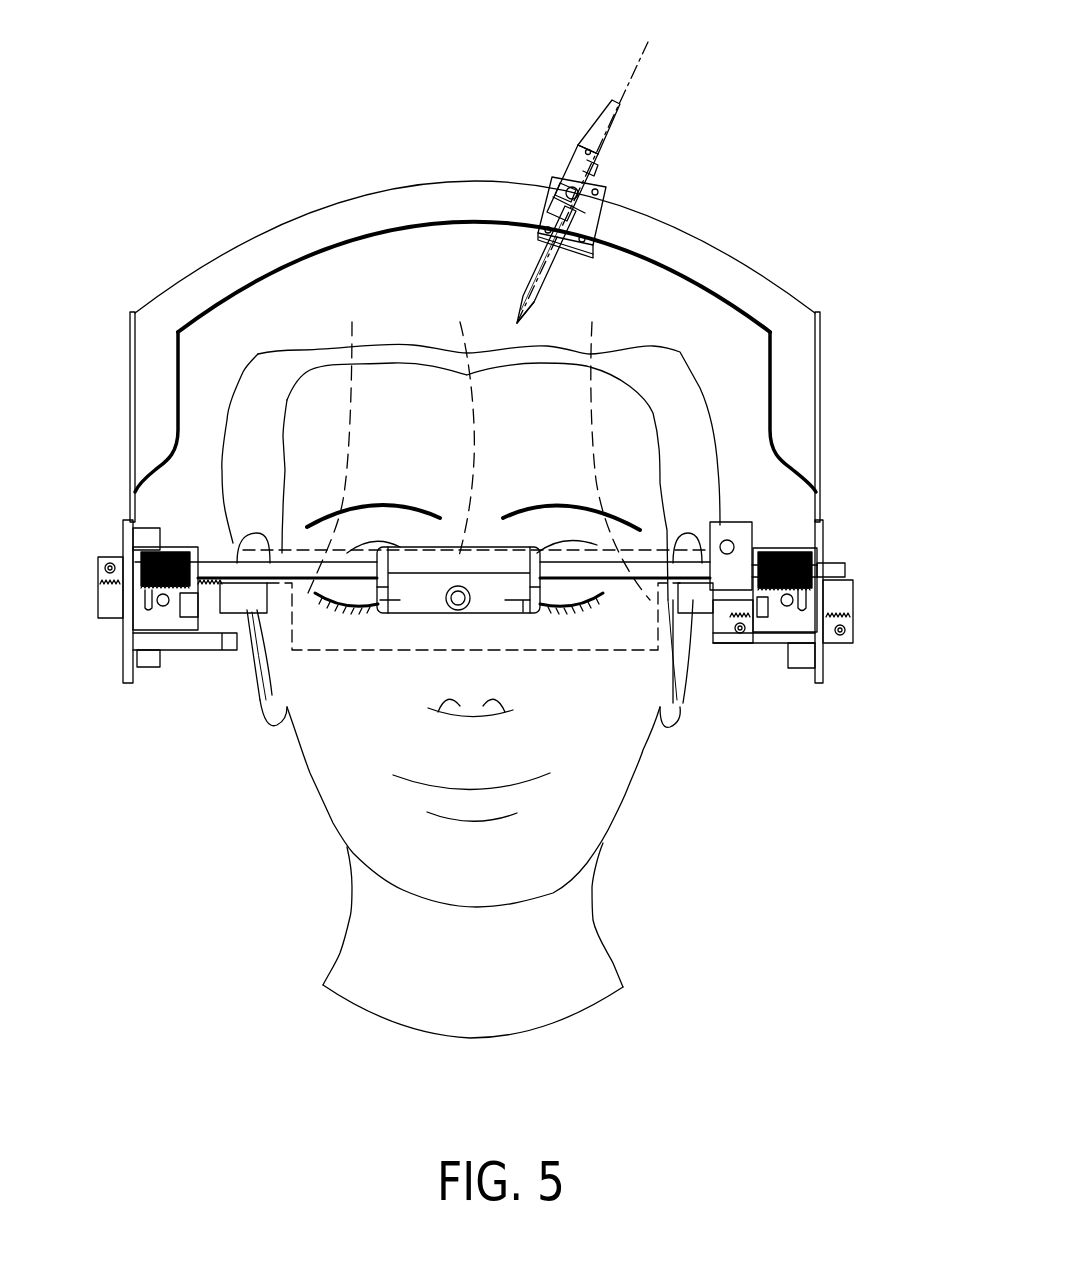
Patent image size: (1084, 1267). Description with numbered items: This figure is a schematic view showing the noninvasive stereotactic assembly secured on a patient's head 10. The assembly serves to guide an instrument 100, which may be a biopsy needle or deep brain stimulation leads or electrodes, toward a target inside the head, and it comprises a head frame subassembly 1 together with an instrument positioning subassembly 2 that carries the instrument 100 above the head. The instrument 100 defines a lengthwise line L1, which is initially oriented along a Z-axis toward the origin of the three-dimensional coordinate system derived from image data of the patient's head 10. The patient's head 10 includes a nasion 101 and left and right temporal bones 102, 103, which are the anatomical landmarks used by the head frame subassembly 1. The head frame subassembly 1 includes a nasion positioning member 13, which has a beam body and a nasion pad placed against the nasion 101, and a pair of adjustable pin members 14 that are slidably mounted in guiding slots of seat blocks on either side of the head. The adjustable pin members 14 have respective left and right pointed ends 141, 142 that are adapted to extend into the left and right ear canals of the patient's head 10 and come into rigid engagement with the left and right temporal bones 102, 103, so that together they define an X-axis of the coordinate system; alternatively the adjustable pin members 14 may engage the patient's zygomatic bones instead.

The head frame subassembly 1 is at (858, 666).
The instrument positioning subassembly 2 is at (722, 252).
The patient's head 10 is at (350, 798).
The nasion positioning member 13 is at (417, 588).
The adjustable pin members 14 is at (247, 612).
The left pointed end 141 is at (668, 655).
The right pointed end 142 is at (290, 595).
The instrument 100 is at (610, 107).
The nasion 101 is at (457, 425).
The left temporal bone 102 is at (610, 445).
The right temporal bone 103 is at (340, 445).
The lengthwise line L1 is at (594, 165).